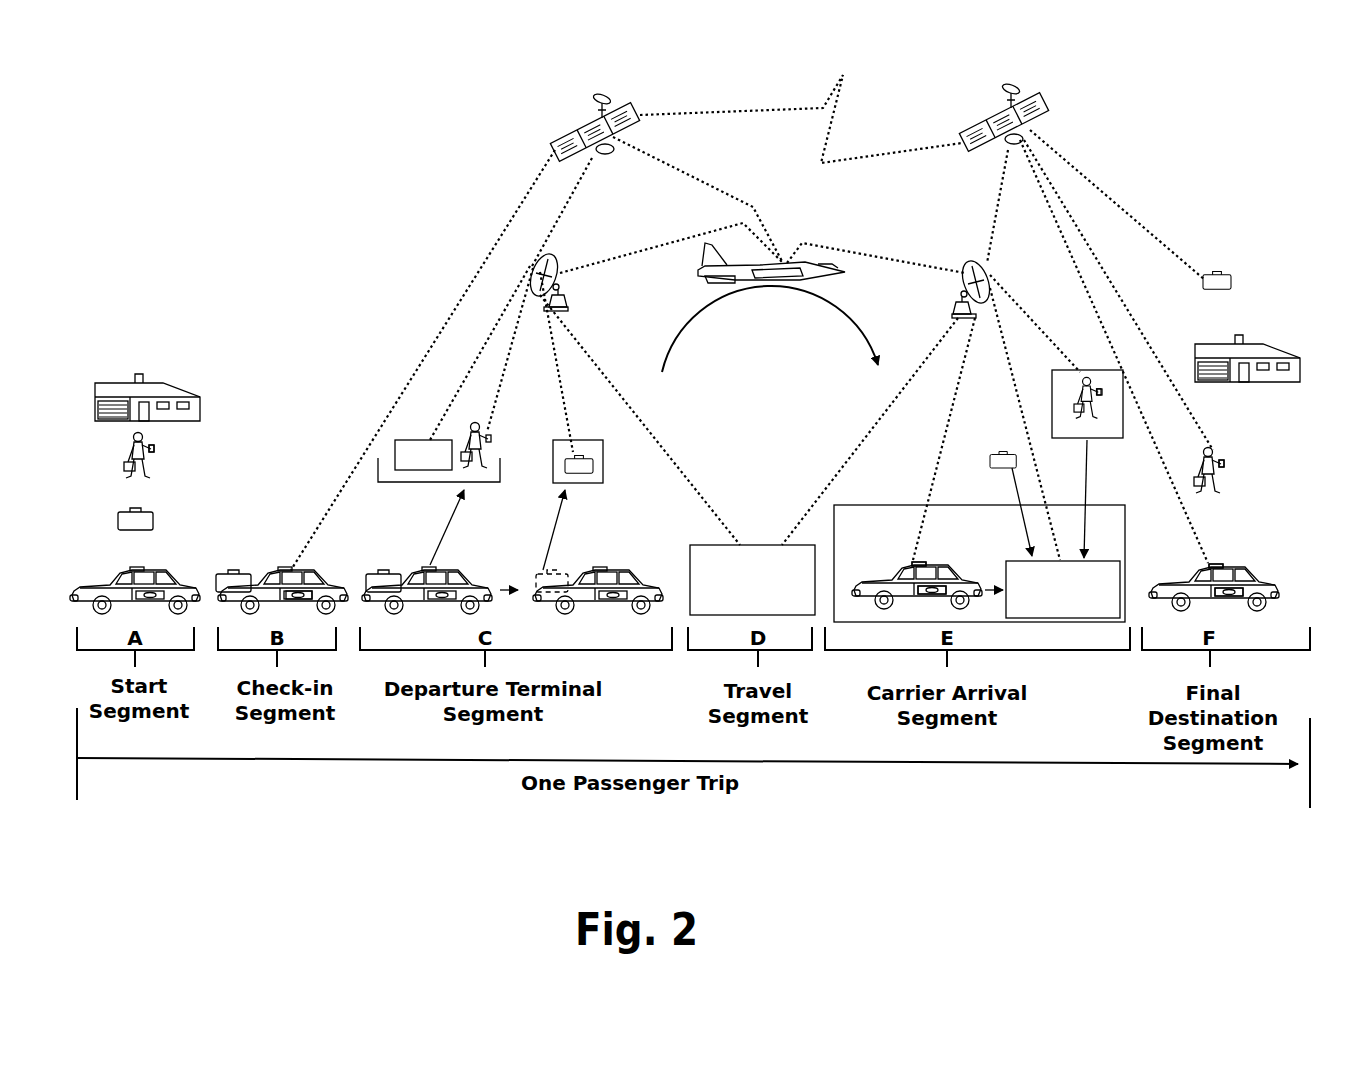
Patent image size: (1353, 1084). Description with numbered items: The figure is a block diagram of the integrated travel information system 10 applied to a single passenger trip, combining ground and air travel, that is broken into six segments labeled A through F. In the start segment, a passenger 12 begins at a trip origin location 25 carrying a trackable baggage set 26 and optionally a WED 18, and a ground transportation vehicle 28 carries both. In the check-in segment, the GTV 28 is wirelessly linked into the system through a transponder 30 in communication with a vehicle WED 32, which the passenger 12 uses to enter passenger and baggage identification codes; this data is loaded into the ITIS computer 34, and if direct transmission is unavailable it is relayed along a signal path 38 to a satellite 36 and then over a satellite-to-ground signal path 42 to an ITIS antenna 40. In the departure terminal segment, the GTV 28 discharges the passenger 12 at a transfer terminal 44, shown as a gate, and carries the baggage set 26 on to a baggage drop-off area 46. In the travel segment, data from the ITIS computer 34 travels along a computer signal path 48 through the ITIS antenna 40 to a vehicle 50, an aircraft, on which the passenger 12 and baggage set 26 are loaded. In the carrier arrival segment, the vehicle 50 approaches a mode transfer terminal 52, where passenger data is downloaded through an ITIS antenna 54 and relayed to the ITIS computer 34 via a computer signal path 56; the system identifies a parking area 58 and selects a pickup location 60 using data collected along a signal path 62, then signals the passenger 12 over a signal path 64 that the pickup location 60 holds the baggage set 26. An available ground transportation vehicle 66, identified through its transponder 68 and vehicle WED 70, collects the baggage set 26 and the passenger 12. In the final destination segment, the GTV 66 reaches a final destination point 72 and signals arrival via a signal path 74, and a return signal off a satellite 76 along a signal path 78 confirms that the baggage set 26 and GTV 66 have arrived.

The integrated travel information system 10 is at (228, 240).
The passenger 12 is at (143, 470).
The WED 18 is at (152, 448).
The trip origin location 25 is at (157, 390).
The trackable baggage set 26 is at (125, 507).
The ground transportation vehicle 28 is at (148, 572).
The transponder 30 is at (283, 565).
The vehicle WED 32 is at (308, 582).
The ITIS computer 34 is at (752, 545).
The satellite 36 is at (575, 135).
The signal path 38 is at (433, 330).
The ITIS antenna 40 is at (556, 260).
The satellite-to-ground signal path 42 is at (570, 205).
The transfer terminal 44 is at (409, 436).
The baggage drop-off area 46 is at (598, 480).
The computer signal path 48 is at (640, 417).
The vehicle 50 is at (838, 272).
The mode transfer terminal 52 is at (1071, 440).
The ITIS antenna 54 is at (966, 264).
The computer signal path 56 is at (910, 378).
The parking area 58 is at (916, 503).
The pickup location 60 is at (1102, 560).
The signal path 62 is at (1001, 345).
The signal path 64 is at (1010, 290).
The ground transportation vehicle 66 is at (868, 575).
The transponder 68 is at (912, 558).
The vehicle WED 70 is at (946, 588).
The final destination point 72 is at (1255, 352).
The signal path 74 is at (1070, 245).
The satellite 76 is at (996, 128).
The signal path 78 is at (1117, 202).